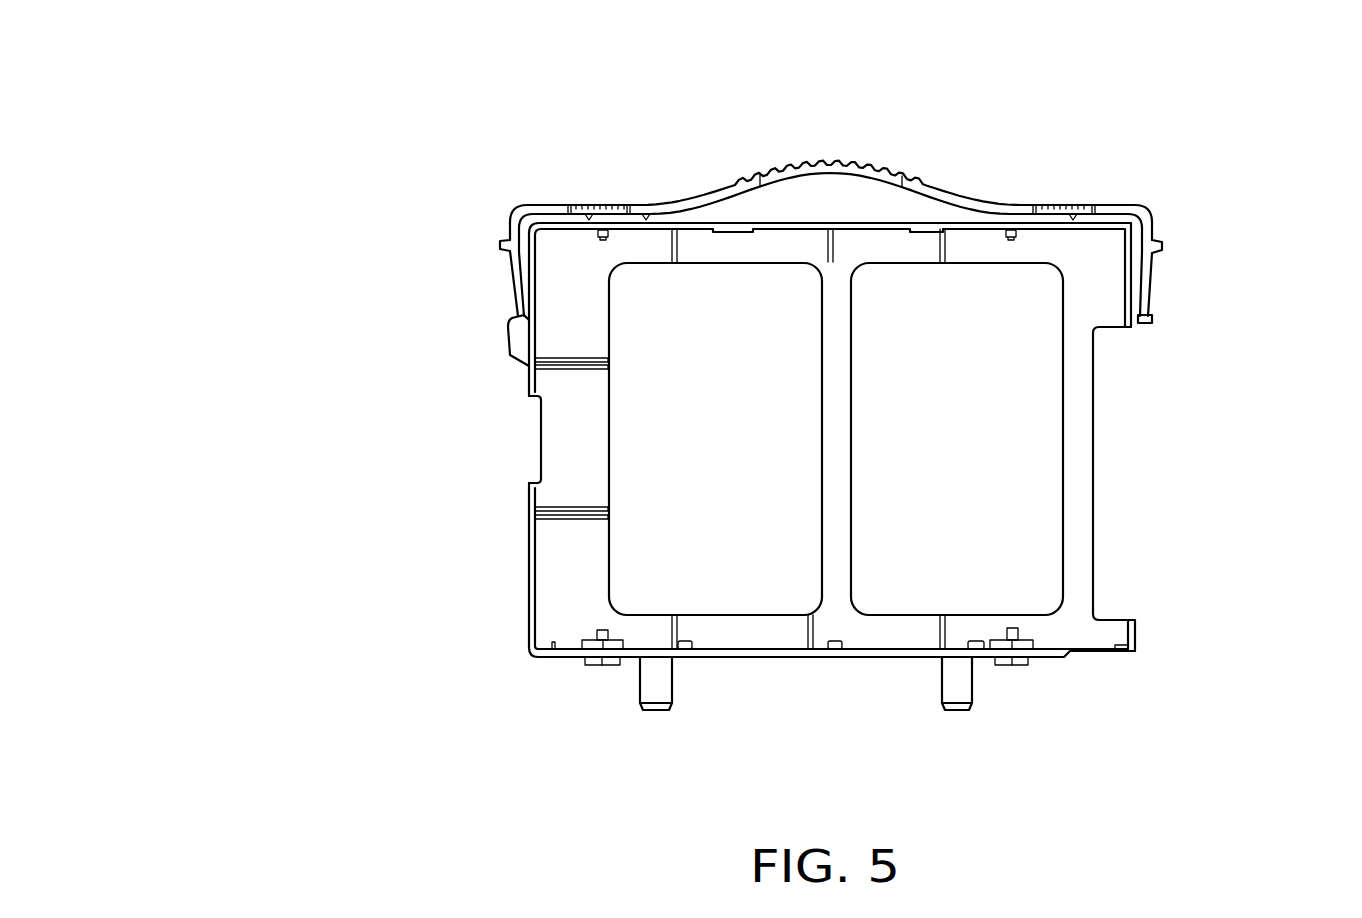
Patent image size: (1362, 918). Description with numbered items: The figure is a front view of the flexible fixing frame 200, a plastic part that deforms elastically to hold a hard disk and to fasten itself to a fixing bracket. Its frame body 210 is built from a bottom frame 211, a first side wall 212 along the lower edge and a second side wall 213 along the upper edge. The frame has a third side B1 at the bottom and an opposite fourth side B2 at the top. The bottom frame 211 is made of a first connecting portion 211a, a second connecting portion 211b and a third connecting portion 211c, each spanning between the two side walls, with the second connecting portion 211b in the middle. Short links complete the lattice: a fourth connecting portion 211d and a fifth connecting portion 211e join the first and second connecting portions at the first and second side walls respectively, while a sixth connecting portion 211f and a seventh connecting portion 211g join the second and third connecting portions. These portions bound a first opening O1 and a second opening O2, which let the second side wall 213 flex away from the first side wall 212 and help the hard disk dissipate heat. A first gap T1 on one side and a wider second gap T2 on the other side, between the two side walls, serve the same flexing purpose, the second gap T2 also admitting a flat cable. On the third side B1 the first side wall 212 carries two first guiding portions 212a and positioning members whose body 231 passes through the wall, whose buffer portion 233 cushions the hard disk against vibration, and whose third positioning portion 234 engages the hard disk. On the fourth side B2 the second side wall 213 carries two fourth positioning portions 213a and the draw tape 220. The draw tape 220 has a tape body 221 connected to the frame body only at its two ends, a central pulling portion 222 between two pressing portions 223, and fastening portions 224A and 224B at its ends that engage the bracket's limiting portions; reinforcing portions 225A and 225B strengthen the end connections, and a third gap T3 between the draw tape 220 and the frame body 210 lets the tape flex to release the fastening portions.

The flexible fixing frame 200 is at (1360, 793).
The frame body 210 is at (195, 263).
The bottom frame 211 is at (265, 187).
The first connecting portion 211a is at (673, 483).
The second connecting portion 211b is at (875, 436).
The third connecting portion 211c is at (1070, 444).
The fourth connecting portion 211d is at (713, 628).
The fifth connecting portion 211e is at (750, 244).
The sixth connecting portion 211f is at (919, 591).
The seventh connecting portion 211g is at (906, 248).
The first side wall 212 is at (858, 729).
The first guiding portion 212a is at (655, 698).
The second side wall 213 is at (660, 92).
The fourth positioning portion 213a is at (596, 236).
The draw tape 220 is at (213, 15).
The tape body 221 is at (972, 166).
The pulling portion 222 is at (787, 170).
The pressing portions 223 is at (1080, 172).
The fastening portion 224A is at (500, 244).
The fastening portion 224B is at (1205, 245).
The reinforcing portion 225A is at (511, 336).
The reinforcing portion 225B is at (1153, 320).
The body 231 is at (591, 659).
The buffer portion 233 is at (582, 646).
The third positioning portion 234 is at (596, 634).
The third side B1 is at (783, 669).
The fourth side B2 is at (838, 213).
The first opening O1 is at (639, 430).
The second opening O2 is at (1056, 381).
The first gap T1 is at (504, 453).
The second gap T2 is at (1126, 494).
The third gap T3 is at (1118, 225).